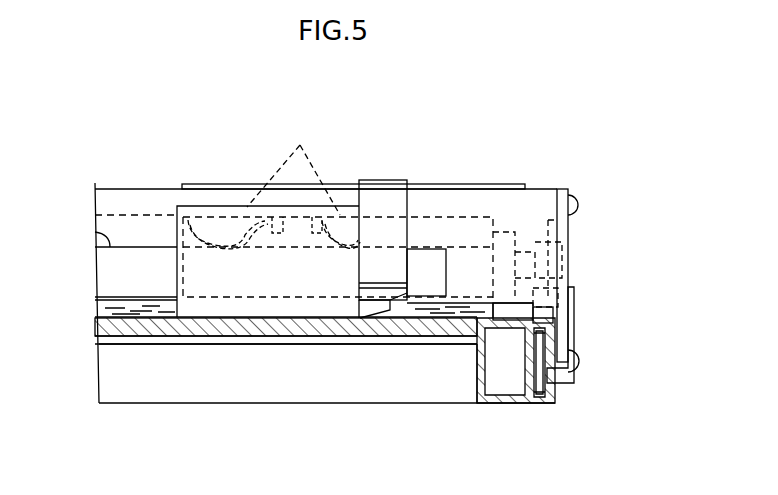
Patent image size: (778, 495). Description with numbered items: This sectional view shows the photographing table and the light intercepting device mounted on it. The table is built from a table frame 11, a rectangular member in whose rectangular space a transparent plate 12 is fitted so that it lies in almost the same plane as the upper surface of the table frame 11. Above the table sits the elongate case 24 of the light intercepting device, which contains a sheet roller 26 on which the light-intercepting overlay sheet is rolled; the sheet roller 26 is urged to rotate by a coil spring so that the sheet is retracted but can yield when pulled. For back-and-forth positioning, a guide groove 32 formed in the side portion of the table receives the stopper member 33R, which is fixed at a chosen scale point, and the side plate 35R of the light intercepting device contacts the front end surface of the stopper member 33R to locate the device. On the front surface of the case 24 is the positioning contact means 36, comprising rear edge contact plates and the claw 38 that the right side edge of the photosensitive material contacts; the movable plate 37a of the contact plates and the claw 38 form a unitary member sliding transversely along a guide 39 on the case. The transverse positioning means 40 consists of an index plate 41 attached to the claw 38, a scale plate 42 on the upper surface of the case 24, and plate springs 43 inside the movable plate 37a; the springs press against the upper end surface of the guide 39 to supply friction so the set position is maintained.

The table frame 11 is at (476, 390).
The transparent plate 12 is at (185, 327).
The elongate case 24 is at (143, 189).
The sheet roller 26 is at (147, 310).
The guide groove 32 is at (539, 392).
The stopper member 33R is at (574, 324).
The side plate 35R is at (568, 236).
The positioning contact means 36 is at (255, 434).
The movable plate 37a is at (258, 337).
The claw 38 is at (342, 337).
The guide 39 is at (95, 232).
The transverse positioning means 40 is at (297, 118).
The index plate 41 is at (377, 181).
The scale plate 42 is at (345, 189).
The plate springs 43 is at (300, 145).